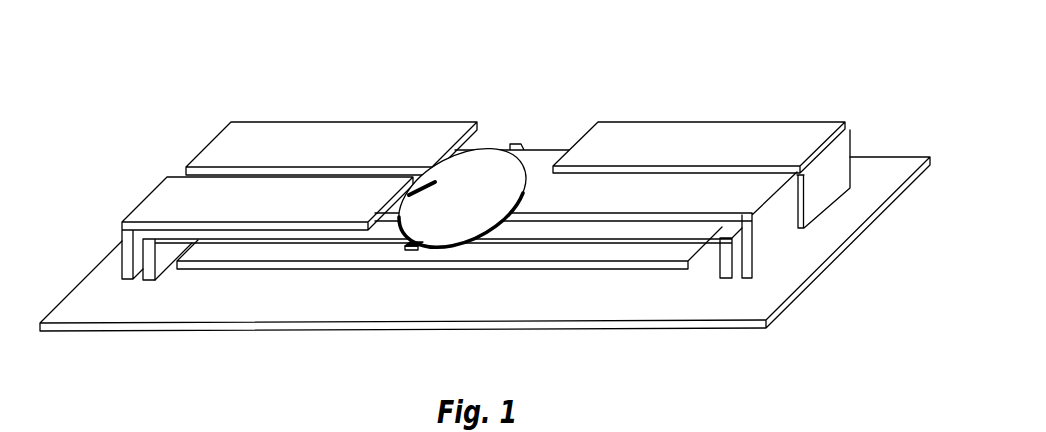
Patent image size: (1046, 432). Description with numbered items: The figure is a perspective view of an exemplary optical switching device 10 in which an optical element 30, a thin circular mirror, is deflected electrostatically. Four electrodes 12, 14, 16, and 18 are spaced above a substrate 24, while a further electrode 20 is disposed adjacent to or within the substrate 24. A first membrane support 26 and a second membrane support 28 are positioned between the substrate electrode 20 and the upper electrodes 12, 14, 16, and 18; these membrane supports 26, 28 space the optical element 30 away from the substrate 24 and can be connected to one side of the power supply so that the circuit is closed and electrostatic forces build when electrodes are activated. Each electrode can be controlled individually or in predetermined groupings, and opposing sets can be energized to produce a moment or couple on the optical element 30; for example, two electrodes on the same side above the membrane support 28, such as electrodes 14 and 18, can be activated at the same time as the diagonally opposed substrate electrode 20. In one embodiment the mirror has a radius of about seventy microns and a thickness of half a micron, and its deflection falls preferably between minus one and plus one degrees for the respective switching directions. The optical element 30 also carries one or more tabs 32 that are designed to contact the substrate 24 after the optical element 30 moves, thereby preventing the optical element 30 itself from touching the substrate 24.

The optical switching device 10 is at (728, 42).
The electrode 12 is at (163, 197).
The electrode 14 is at (247, 147).
The electrode 16 is at (745, 195).
The electrode 18 is at (678, 135).
The electrode 20 is at (242, 270).
The substrate 24 is at (377, 323).
The first membrane support 26 is at (318, 233).
The second membrane support 28 is at (535, 163).
The optical element 30 is at (468, 210).
The tab 32 is at (407, 252).